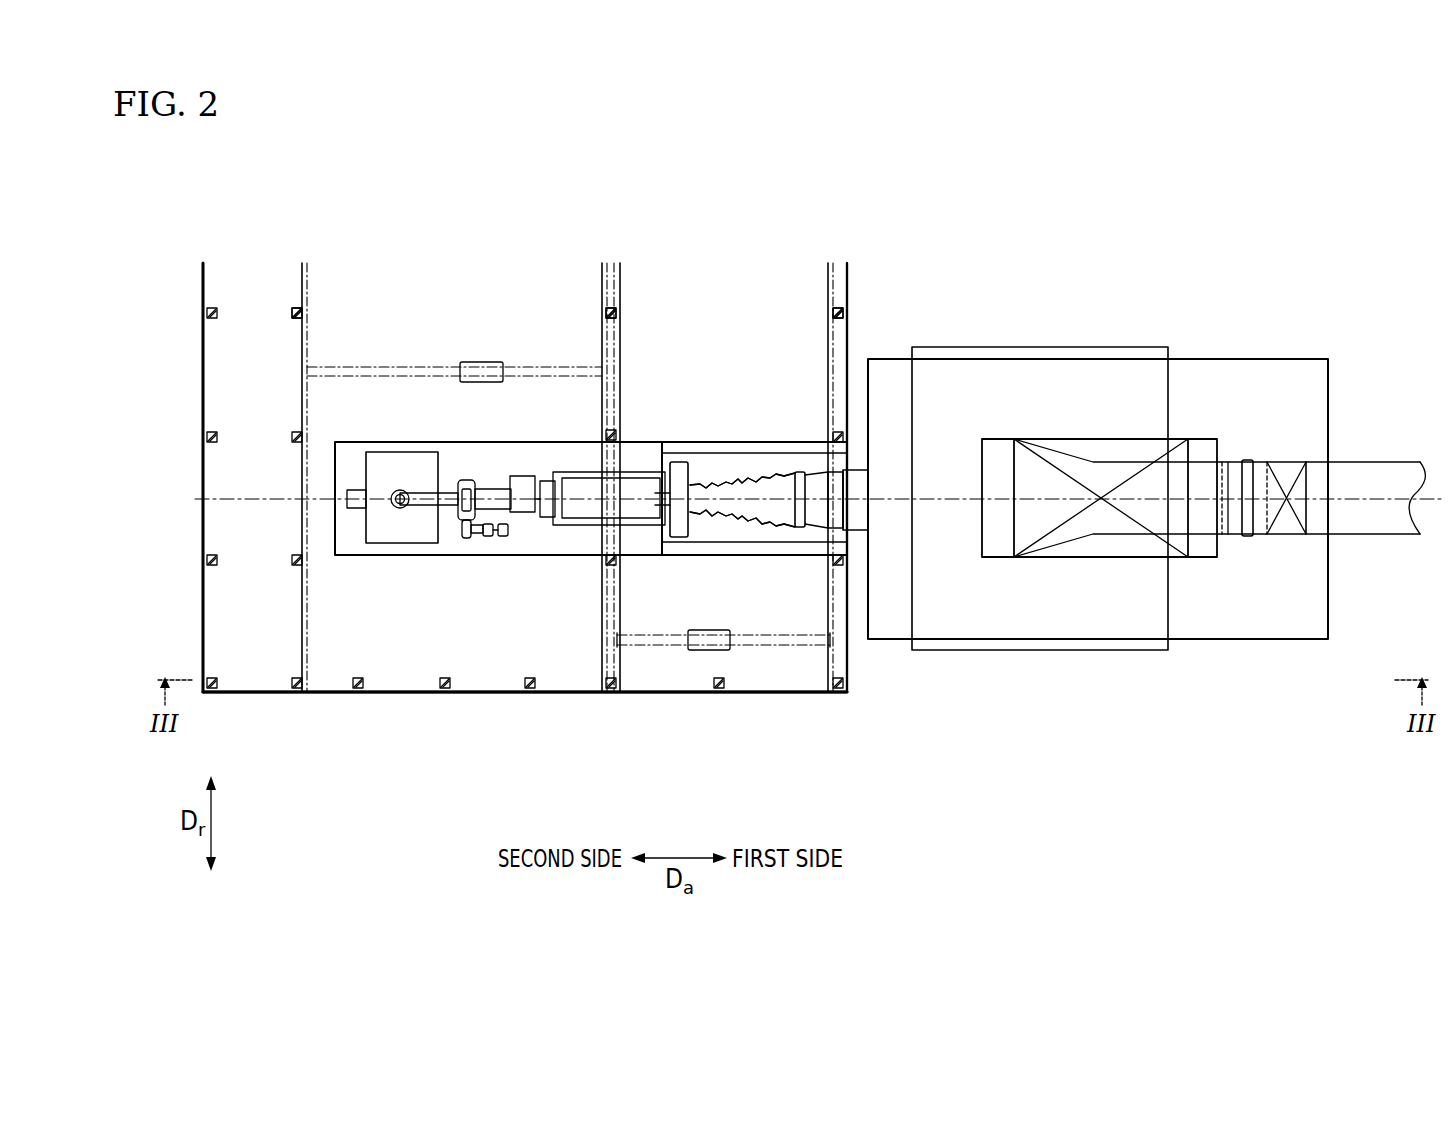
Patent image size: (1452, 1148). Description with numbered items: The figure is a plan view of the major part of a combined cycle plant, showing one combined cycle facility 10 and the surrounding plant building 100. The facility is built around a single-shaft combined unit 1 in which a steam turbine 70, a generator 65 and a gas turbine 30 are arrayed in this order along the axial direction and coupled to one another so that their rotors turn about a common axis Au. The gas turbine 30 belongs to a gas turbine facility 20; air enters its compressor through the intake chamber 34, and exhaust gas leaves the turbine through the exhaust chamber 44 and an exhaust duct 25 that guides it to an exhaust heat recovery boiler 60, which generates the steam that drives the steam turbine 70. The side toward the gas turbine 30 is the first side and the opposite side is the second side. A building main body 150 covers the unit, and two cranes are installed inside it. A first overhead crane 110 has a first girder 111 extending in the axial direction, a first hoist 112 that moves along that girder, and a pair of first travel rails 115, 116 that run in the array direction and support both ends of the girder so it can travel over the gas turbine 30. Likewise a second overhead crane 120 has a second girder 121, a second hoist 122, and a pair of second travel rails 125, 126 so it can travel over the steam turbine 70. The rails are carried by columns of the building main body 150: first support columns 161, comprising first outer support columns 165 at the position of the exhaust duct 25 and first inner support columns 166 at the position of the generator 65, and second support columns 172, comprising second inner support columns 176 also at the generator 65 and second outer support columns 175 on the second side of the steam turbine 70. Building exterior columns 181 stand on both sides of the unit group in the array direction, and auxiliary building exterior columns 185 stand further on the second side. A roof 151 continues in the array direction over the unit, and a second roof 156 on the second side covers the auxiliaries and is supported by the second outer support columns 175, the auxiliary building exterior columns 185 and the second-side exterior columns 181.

The single-shaft combined unit 1 is at (411, 477).
The combined cycle facility 10 is at (1146, 466).
The gas turbine facility 20 is at (742, 472).
The exhaust duct 25 is at (860, 475).
The gas turbine 30 is at (742, 500).
The intake chamber 34 is at (677, 460).
The exhaust chamber 44 is at (810, 462).
The exhaust heat recovery boiler 60 is at (1114, 560).
The generator 65 is at (577, 527).
The steam turbine 70 is at (400, 545).
The axis Au is at (343, 498).
The plant building 100 is at (197, 591).
The first overhead crane 110 is at (731, 730).
The first girder 111 is at (738, 648).
The first hoist 112 is at (706, 709).
The first travel rail 115 is at (826, 290).
The first travel rail 116 is at (620, 300).
The second overhead crane 120 is at (454, 256).
The second girder 121 is at (420, 365).
The second hoist 122 is at (482, 325).
The second travel rail 125 is at (307, 283).
The second travel rail 126 is at (602, 285).
The building main body 150 is at (194, 270).
The roof 151 is at (478, 695).
The second roof 156 is at (245, 695).
The first support column 161 is at (845, 312).
The first outer support column 165 is at (838, 690).
The first inner support column 166 is at (611, 690).
The second support column 172 is at (292, 311).
The second outer support column 175 is at (296, 690).
The second inner support column 176 is at (616, 311).
The building exterior column 181 is at (445, 690).
The auxiliary building exterior column 185 is at (208, 434).